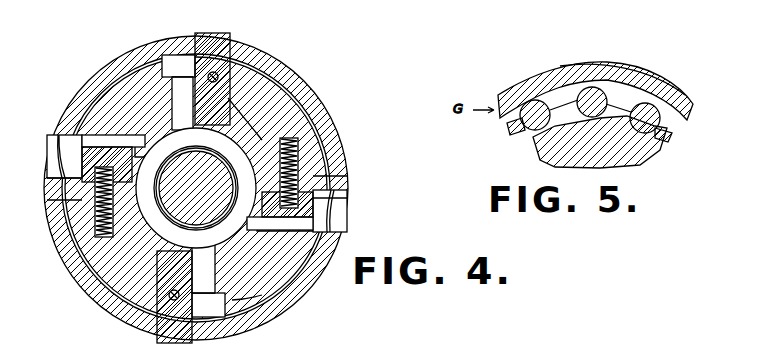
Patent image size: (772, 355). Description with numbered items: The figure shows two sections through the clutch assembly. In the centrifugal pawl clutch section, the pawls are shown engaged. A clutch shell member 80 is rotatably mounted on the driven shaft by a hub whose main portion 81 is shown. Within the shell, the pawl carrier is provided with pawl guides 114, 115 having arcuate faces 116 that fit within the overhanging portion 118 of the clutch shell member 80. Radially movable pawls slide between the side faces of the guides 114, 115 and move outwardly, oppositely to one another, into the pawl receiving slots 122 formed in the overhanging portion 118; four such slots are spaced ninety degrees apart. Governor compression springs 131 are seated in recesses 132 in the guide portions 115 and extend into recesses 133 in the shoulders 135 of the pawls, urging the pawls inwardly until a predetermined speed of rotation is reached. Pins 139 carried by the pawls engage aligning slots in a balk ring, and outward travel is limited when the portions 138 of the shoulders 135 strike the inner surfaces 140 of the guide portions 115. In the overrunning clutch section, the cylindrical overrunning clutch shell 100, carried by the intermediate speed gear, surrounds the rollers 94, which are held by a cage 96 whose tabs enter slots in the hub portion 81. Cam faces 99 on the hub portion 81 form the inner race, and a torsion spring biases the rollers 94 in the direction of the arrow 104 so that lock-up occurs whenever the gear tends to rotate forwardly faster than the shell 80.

In FIG. 4, the clutch shell member 80 is at (95, 69).
In FIG. 4, the pawl guide 114 is at (92, 118).
In FIG. 4, the pawl guide 115 is at (305, 105).
In FIG. 4, the arcuate faces 116 is at (258, 306).
In FIG. 4, the overhanging portion 118 is at (300, 86).
In FIG. 4, the pawl receiving slots 122 is at (231, 36).
In FIG. 4, the governor compression springs 131 is at (98, 195).
In FIG. 4, the recesses 132 is at (100, 212).
In FIG. 4, the recesses 133 is at (92, 176).
In FIG. 4, the shoulders 135 is at (196, 188).
In FIG. 4, the portions 138 is at (128, 170).
In FIG. 4, the pins 139 is at (213, 33).
In FIG. 4, the inner surfaces 140 is at (255, 205).
In FIG. 5, the overrunning clutch shell 100 is at (520, 82).
In FIG. 5, the arrow 104 is at (610, 80).
In FIG. 5, the rollers 94 is at (600, 120).
In FIG. 5, the cage 96 is at (515, 128).
In FIG. 5, the cam faces 99 is at (662, 138).
In FIG. 5, the main portion of hub 81 is at (630, 163).